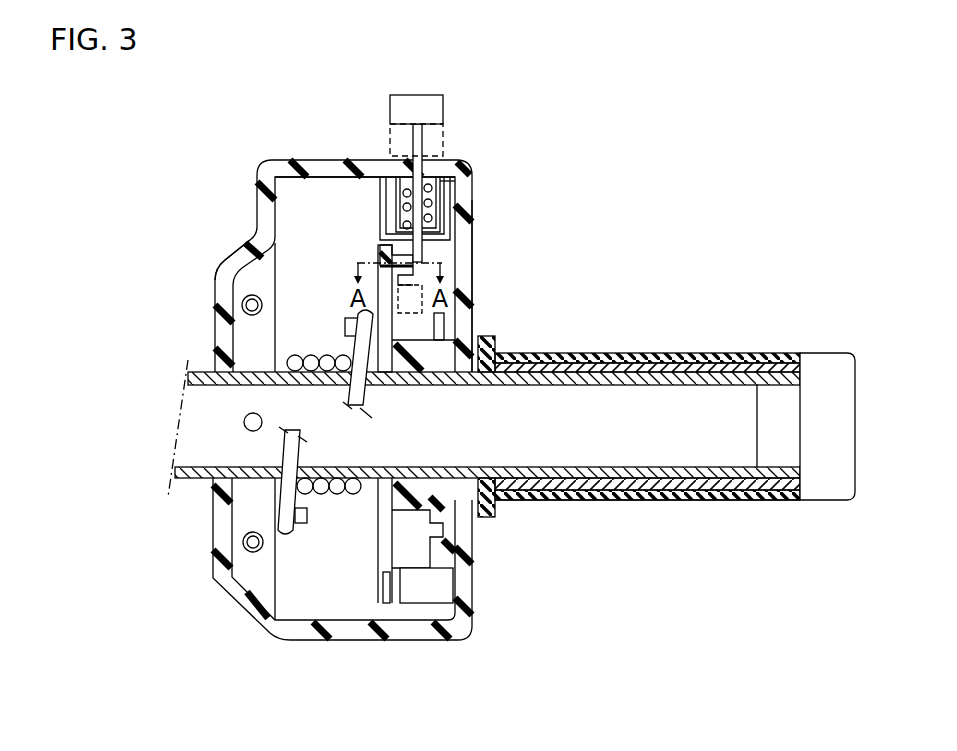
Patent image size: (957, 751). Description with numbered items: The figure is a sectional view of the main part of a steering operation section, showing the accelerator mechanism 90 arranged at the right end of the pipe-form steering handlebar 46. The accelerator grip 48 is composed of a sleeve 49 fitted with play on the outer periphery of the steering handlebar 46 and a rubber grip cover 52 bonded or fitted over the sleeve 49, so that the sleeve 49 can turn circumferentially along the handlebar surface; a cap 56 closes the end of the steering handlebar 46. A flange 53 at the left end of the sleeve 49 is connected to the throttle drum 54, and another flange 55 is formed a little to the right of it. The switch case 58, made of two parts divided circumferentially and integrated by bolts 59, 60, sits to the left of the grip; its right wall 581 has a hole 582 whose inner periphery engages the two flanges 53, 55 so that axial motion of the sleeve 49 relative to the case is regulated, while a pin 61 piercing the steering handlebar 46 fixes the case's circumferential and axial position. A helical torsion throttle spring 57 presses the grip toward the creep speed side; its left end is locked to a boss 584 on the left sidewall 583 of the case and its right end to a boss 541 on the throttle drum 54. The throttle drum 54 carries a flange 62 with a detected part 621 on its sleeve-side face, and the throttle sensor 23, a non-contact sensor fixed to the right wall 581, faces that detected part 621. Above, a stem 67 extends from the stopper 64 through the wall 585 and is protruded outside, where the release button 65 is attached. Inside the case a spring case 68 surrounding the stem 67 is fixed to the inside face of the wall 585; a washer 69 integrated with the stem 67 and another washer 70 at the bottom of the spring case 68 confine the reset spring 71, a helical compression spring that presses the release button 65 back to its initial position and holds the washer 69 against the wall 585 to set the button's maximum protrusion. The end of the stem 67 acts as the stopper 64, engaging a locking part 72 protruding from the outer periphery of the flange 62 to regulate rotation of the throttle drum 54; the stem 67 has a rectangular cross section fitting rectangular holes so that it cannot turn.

The throttle sensor 23 is at (428, 590).
The steering handlebar 46 is at (692, 472).
The accelerator grip 48 is at (487, 414).
The sleeve 49 is at (723, 368).
The grip cover 52 is at (762, 360).
The flange 53 is at (440, 365).
The throttle drum 54 is at (390, 496).
The flange 55 is at (493, 344).
The cap 56 is at (828, 362).
The throttle spring 57 is at (295, 355).
The switch case 58 is at (383, 219).
The bolt 59 is at (242, 305).
The bolt 60 is at (243, 546).
The pin 61 is at (245, 427).
The flange 62 is at (384, 542).
The stopper 64 is at (415, 258).
The release button 65 is at (437, 110).
The stem 67 is at (418, 169).
The spring case 68 is at (380, 203).
The washer 69 is at (455, 181).
The washer 70 is at (443, 232).
The reset spring 71 is at (430, 204).
The locking part 72 is at (380, 256).
The accelerator mechanism 90 is at (648, 245).
The boss 541 is at (345, 326).
The right wall 581 is at (465, 276).
The hole 582 is at (495, 500).
The left sidewall 583 is at (252, 578).
The boss 584 is at (306, 520).
The wall 585 is at (343, 170).
The detected part 621 is at (397, 584).